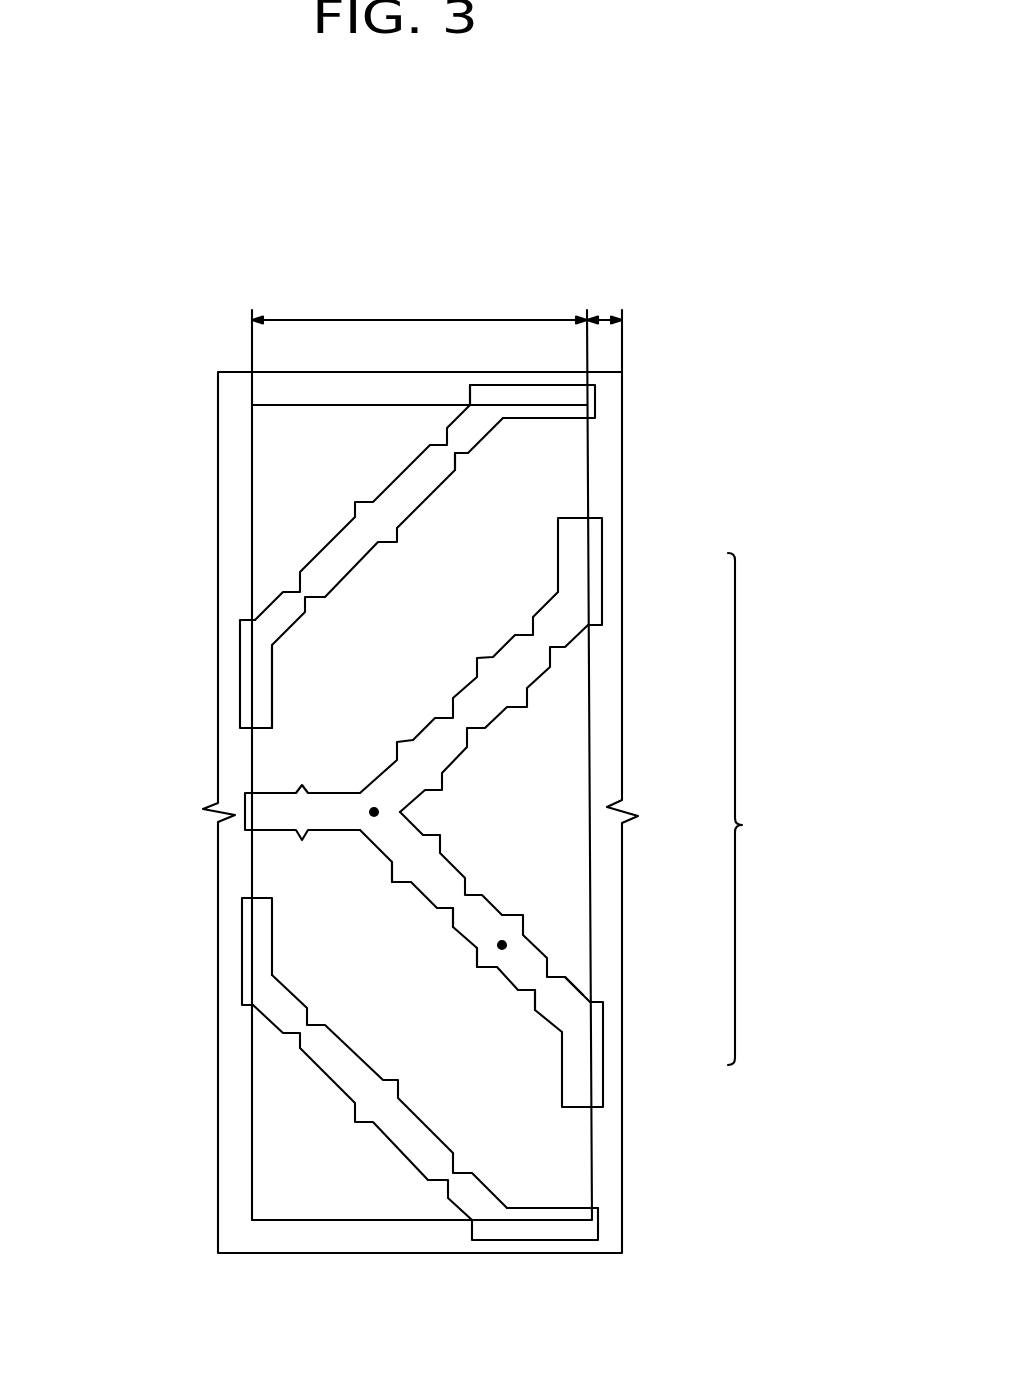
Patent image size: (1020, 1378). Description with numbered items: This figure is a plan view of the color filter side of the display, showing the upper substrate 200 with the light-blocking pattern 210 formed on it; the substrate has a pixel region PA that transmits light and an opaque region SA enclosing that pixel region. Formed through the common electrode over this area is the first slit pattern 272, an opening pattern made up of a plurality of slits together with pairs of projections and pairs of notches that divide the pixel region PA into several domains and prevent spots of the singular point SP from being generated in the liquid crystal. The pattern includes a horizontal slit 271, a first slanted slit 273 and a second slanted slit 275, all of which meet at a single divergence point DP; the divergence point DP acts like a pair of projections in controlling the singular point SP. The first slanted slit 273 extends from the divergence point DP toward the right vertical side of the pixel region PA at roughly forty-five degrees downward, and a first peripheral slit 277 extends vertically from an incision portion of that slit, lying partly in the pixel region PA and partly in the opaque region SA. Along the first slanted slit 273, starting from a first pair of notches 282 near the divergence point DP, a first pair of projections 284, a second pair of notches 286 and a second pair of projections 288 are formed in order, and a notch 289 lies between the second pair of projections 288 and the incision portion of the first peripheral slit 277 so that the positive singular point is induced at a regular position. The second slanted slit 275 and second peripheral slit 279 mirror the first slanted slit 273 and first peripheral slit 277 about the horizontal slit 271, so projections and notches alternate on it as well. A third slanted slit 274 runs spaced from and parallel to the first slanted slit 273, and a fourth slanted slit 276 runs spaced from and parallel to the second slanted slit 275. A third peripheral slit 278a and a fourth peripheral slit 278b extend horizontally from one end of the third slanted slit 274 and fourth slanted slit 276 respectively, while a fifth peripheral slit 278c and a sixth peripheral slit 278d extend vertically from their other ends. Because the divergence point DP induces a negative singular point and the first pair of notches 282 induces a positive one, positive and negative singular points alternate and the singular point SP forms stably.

The upper substrate 200 is at (459, 158).
The light-blocking pattern 210 is at (612, 1170).
The horizontal slit 271 is at (291, 793).
The first slit pattern 272 is at (577, 812).
The first slanted slit 273 is at (540, 948).
The third slanted slit 274 is at (337, 1087).
The second slanted slit 275 is at (537, 674).
The fourth slanted slit 276 is at (342, 524).
The first peripheral slit 277 is at (578, 1055).
The third peripheral slit 278a is at (538, 1240).
The fourth peripheral slit 278b is at (537, 392).
The fifth peripheral slit 278c is at (241, 940).
The sixth peripheral slit 278d is at (241, 676).
The second peripheral slit 279 is at (580, 571).
The first pair of notches 282 is at (397, 883).
The first pair of projections 284 is at (447, 920).
The second pair of notches 286 is at (472, 970).
The second pair of projections 288 is at (468, 452).
The notch 289 is at (470, 392).
The divergence point DP is at (373, 808).
The singular point SP is at (502, 940).
The pixel region PA is at (419, 301).
The opaque region SA is at (604, 301).